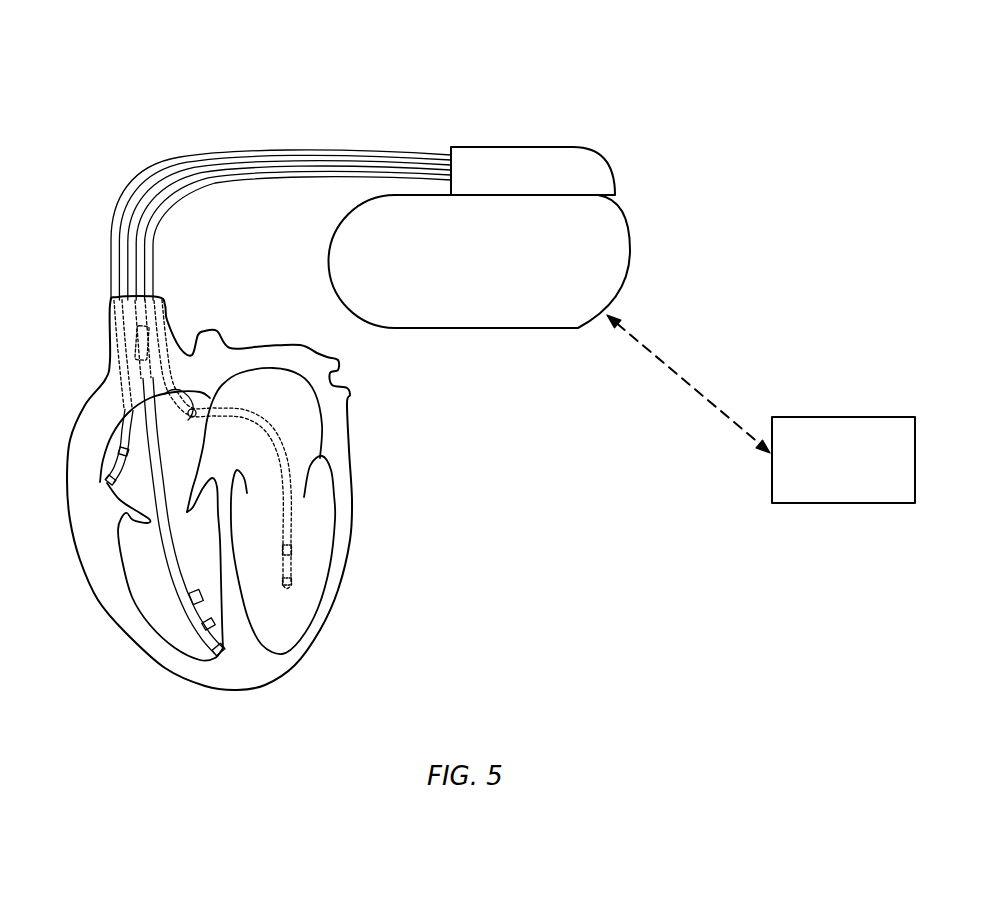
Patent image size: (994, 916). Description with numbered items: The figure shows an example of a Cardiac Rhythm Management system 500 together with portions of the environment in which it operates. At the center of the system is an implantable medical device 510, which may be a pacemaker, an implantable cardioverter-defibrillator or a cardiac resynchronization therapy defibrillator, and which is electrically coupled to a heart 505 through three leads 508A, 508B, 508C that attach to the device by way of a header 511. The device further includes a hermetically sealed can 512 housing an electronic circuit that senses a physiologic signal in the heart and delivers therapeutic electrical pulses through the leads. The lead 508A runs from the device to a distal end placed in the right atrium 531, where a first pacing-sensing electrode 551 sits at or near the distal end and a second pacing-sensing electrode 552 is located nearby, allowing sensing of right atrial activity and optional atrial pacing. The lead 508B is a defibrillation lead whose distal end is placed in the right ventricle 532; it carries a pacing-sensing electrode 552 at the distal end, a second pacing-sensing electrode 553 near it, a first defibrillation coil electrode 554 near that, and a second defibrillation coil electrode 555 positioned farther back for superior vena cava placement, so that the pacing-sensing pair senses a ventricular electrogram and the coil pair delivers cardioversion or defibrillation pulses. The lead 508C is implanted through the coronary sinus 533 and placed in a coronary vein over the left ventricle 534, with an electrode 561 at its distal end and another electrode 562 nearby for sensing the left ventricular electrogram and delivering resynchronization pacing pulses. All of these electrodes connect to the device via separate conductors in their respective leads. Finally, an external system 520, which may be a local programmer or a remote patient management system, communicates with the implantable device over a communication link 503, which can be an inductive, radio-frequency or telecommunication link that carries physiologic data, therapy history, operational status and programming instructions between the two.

The Cardiac Rhythm Management (CRM) system 500 is at (745, 80).
The implantable medical device (IMD) 510 is at (588, 140).
The header 511 is at (615, 178).
The hermetically sealed can 512 is at (630, 252).
The lead 508A is at (195, 162).
The lead 508B is at (278, 162).
The lead 508C is at (353, 173).
The communication link 503 is at (667, 362).
The external system 520 is at (875, 417).
The heart 505 is at (353, 535).
The right atrium (RA) 531 is at (120, 430).
The right ventricle (RV) 532 is at (147, 543).
The coronary sinus 533 is at (203, 397).
The left ventricle (LV) 534 is at (282, 627).
The second defibrillation coil electrode 555 is at (143, 347).
The first pacing-sensing electrode 551 is at (111, 478).
The pacing-sensing electrode 552 is at (118, 458).
The second pacing-sensing electrode 553 is at (203, 625).
The first defibrillation coil electrode 554 is at (193, 597).
The electrode 561 is at (287, 579).
The electrode 562 is at (287, 550).